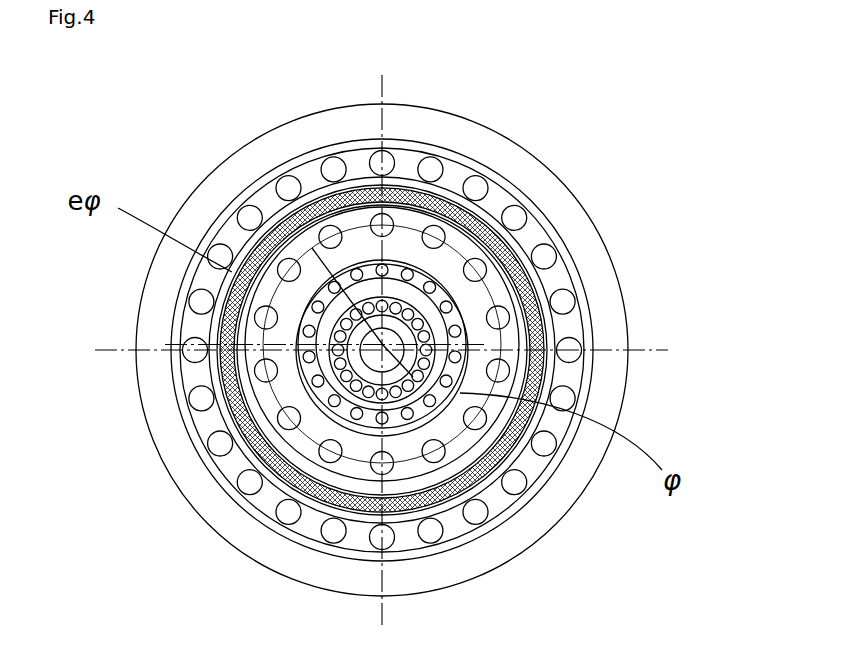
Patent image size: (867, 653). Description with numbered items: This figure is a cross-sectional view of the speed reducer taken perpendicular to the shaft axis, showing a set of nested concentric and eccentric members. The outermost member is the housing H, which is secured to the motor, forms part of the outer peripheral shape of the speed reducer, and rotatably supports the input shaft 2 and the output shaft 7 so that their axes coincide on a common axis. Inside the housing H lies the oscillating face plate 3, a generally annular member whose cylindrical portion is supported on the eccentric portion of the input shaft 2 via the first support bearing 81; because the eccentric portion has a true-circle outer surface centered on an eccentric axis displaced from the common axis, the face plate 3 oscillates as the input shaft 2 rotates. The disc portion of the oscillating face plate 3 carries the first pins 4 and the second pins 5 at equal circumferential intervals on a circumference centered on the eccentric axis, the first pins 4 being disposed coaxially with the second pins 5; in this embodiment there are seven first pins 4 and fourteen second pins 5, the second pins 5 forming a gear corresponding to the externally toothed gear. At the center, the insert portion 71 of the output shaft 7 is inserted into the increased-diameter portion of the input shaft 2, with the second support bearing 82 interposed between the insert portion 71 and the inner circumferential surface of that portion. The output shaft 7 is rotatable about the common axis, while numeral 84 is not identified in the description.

The input shaft 2 is at (303, 307).
The oscillating face plate 3 is at (403, 212).
The first pins 4 is at (378, 212).
The second pins 5 is at (452, 222).
The output shaft 7 is at (358, 362).
The insert portion 71 is at (358, 362).
The first support bearing 81 is at (230, 215).
The second support bearing 82 is at (360, 365).
The balls 84 is at (478, 188).
The housing H is at (616, 312).